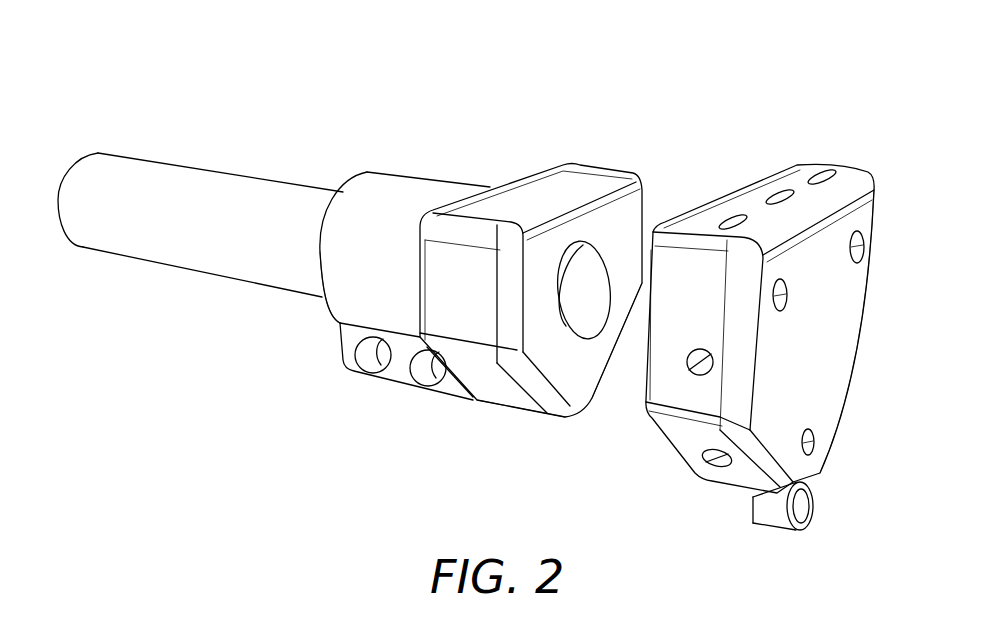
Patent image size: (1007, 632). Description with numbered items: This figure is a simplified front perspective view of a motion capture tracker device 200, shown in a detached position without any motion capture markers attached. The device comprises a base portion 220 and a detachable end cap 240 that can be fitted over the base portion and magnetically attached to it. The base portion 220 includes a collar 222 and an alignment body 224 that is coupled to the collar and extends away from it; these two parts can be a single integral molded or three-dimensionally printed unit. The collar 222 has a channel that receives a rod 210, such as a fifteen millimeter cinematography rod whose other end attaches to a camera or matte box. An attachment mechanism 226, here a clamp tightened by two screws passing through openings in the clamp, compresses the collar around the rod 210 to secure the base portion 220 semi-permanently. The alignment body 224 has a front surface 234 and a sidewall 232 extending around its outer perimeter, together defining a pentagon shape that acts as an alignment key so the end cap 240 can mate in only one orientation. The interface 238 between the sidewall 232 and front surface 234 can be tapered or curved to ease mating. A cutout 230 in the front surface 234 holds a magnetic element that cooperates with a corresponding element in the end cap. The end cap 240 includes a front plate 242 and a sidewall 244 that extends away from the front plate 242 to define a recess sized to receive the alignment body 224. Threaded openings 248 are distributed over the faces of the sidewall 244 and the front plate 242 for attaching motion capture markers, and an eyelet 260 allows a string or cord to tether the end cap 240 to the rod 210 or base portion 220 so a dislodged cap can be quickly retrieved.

The motion capture tracker device 200 is at (192, 66).
The rod 210 is at (227, 226).
The base portion 220 is at (405, 175).
The collar 222 is at (327, 308).
The alignment body 224 is at (532, 173).
The attachment mechanism 226 is at (402, 385).
The cutout 230 is at (597, 242).
The sidewall 232 is at (493, 390).
The front surface 234 is at (580, 372).
The interface 238 is at (547, 405).
The end cap 240 is at (747, 182).
The front plate 242 is at (840, 353).
The sidewall 244 is at (682, 437).
The threaded openings 248 is at (833, 175).
The eyelet 260 is at (807, 507).